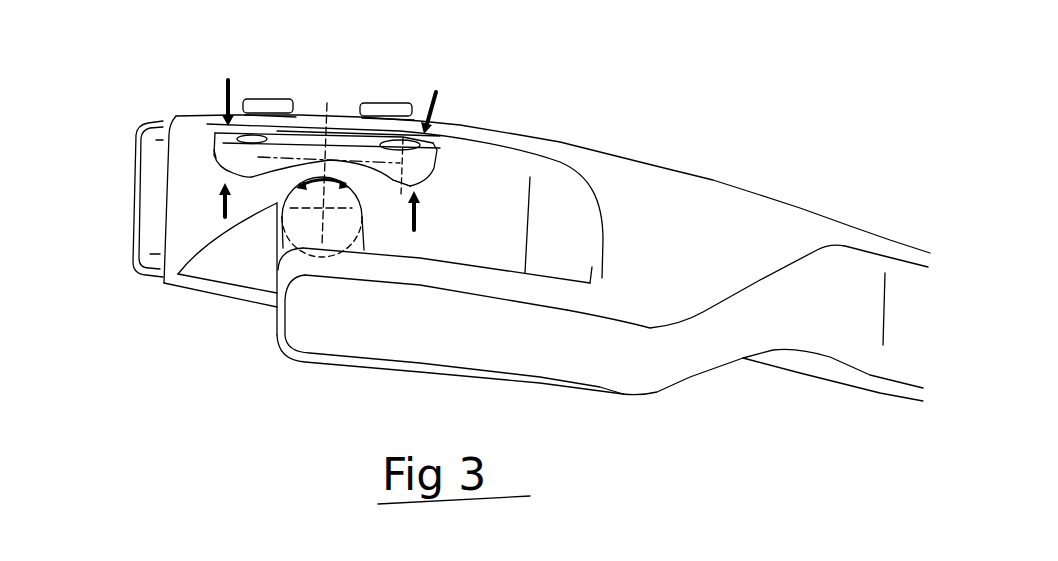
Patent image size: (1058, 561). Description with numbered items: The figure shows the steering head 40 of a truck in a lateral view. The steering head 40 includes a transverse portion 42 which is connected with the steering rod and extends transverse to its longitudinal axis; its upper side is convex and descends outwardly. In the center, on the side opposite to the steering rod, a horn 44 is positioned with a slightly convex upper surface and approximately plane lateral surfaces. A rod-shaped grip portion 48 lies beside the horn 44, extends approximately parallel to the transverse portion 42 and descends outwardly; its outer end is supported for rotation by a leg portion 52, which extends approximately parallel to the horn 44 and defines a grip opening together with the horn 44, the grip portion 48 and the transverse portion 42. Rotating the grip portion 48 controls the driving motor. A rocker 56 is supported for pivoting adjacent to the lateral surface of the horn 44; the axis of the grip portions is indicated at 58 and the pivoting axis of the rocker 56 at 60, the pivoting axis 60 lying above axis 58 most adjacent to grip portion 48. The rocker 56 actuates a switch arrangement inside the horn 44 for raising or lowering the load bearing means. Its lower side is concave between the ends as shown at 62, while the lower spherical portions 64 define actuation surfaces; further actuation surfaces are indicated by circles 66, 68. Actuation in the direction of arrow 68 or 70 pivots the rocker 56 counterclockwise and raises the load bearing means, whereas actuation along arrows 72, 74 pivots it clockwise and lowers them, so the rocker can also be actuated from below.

The steering head 40 is at (620, 104).
The transverse portion 42 is at (690, 290).
The horn 44 is at (176, 114).
The grip portion 48 is at (160, 284).
The leg portion 52 is at (550, 357).
The rocker 56 is at (435, 165).
The axis of grip portions 58 is at (314, 214).
The pivoting axis of the rocker 60 is at (329, 155).
The concave lower side 62 is at (371, 184).
The lower convex or spherical portions 64 is at (246, 176).
The actuation surface circle 66 is at (310, 110).
The actuation surface circle / arrow 68 is at (218, 87).
The arrow 70 is at (425, 228).
The arrow 72 is at (441, 106).
The arrow 74 is at (212, 212).